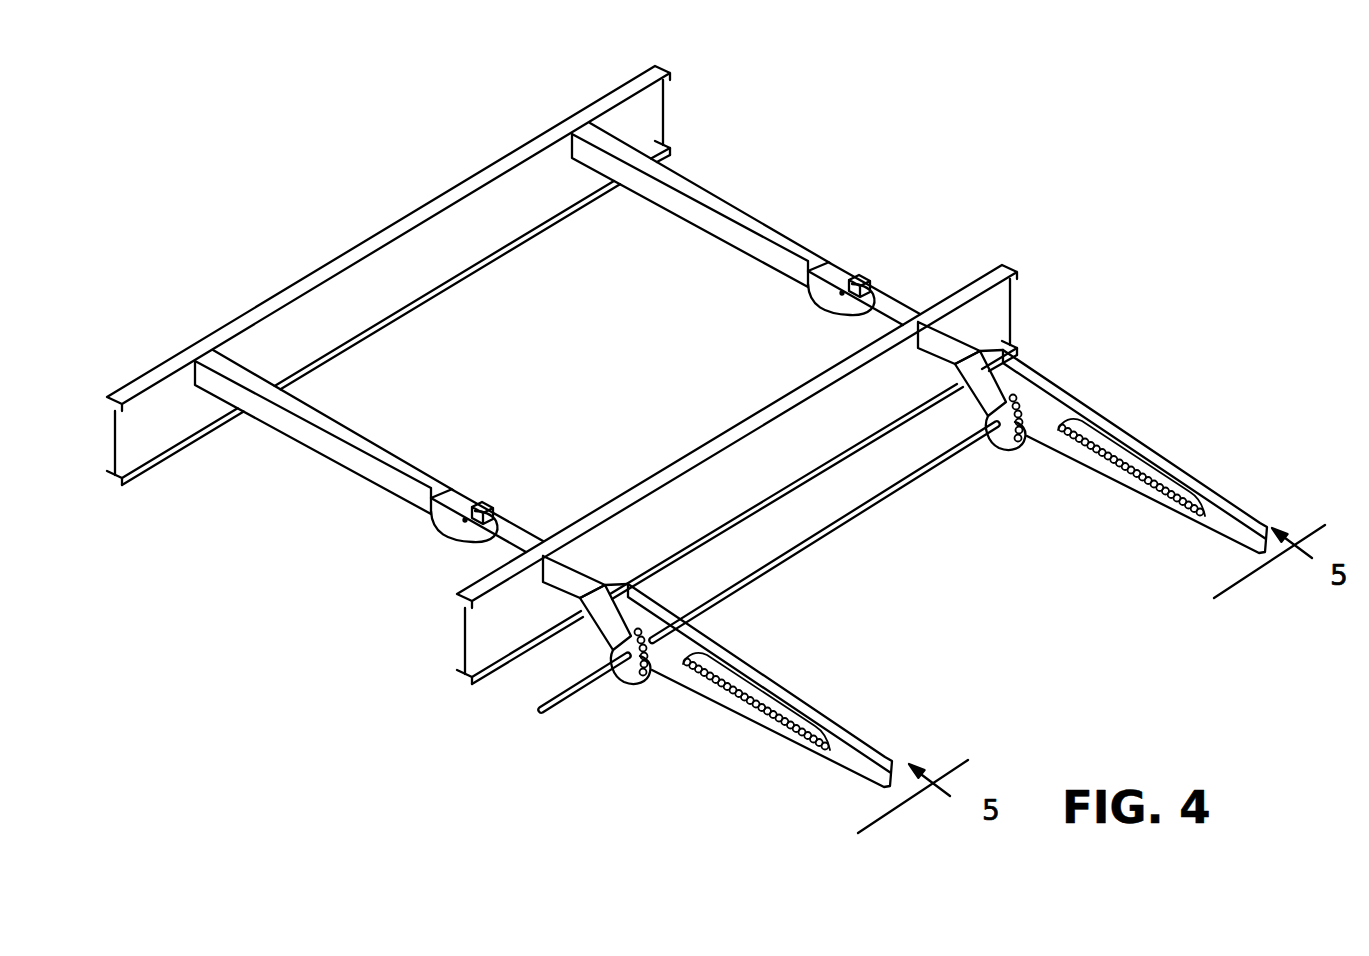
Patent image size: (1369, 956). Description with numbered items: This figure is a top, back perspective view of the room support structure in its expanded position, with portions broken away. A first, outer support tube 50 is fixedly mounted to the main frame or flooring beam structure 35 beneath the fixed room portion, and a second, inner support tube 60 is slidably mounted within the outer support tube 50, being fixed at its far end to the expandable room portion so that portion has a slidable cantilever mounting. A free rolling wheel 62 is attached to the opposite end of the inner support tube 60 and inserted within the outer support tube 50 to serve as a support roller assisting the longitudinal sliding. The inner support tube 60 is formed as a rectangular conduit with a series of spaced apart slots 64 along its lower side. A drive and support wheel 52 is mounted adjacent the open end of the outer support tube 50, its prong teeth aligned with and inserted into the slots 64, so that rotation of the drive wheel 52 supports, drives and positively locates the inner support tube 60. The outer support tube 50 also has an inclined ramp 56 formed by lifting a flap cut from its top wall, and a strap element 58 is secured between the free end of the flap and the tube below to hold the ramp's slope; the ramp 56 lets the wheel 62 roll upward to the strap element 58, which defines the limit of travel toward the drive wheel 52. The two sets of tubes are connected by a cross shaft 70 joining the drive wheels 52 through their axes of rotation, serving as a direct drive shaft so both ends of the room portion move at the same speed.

The flooring beam structure 35 is at (273, 298).
The outer support tube 50 is at (689, 203).
The drive and support wheel 52 is at (1026, 446).
The inclined ramp 56 is at (848, 272).
The strap element 58 is at (495, 506).
The inner support tube 60 is at (1062, 391).
The free rolling wheel 62 is at (843, 287).
The slots 64 is at (1160, 493).
The cross shaft 70 is at (836, 526).